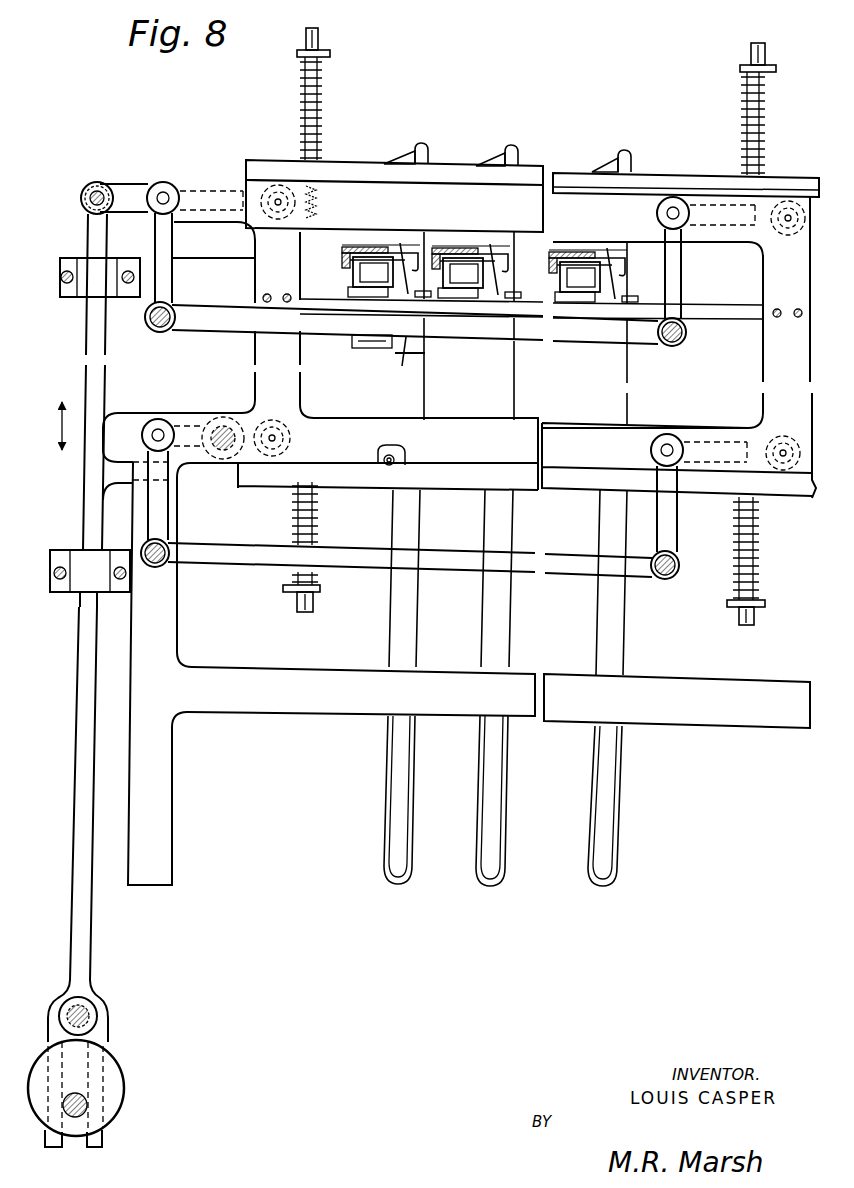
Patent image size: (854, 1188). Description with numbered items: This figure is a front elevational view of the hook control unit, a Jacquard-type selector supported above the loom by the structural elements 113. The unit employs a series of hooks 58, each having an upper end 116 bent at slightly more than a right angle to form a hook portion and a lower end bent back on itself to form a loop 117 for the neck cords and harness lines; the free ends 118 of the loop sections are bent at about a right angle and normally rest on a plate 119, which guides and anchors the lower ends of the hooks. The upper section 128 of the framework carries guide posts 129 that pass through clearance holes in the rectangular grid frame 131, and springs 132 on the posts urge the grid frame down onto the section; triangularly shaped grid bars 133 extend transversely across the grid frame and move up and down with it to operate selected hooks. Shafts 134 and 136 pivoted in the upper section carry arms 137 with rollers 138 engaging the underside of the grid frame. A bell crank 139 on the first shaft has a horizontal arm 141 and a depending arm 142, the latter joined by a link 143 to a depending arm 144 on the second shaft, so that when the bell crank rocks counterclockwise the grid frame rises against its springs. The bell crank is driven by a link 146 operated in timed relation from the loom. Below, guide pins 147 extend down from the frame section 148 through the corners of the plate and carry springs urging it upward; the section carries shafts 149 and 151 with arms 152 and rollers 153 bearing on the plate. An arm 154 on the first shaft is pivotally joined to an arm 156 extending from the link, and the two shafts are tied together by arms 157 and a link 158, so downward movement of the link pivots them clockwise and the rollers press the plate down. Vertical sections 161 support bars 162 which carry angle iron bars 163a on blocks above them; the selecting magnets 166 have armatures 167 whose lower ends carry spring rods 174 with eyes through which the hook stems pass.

The hook 58 is at (484, 636).
The structural elements 113 is at (178, 812).
The upper ends 116 is at (422, 147).
The loop 117 is at (482, 885).
The free ends 118 is at (389, 450).
The plate 119 is at (472, 489).
The upper section 128 is at (533, 194).
The guide posts 129 is at (321, 44).
The grid frame 131 is at (690, 173).
The springs 132 is at (333, 82).
The grid bars 133 is at (403, 160).
The shaft 134 is at (170, 186).
The shaft 136 is at (660, 214).
The arms 137 is at (222, 190).
The rollers 138 is at (278, 184).
The bell crank 139 is at (131, 190).
The horizontal arm 141 is at (82, 183).
The depending arm 142 is at (168, 262).
The link 143 is at (543, 332).
The depending arm 144 is at (684, 282).
The link 146 is at (85, 368).
The guide pins 147 is at (306, 612).
The frame section 148 is at (558, 440).
The shaft 149 is at (160, 420).
The shaft 151 is at (669, 436).
The arms 152 is at (245, 430).
The rollers 153 is at (290, 420).
The arm 154 is at (183, 428).
The arm 156 is at (118, 465).
The arms 157 is at (168, 521).
The link 158 is at (530, 558).
The vertical sections 161 is at (265, 276).
The bars 162 is at (700, 320).
The angle iron bars 163a is at (348, 250).
The selecting magnets 166 is at (352, 273).
The armatures 167 is at (385, 357).
The rod 174 is at (412, 358).